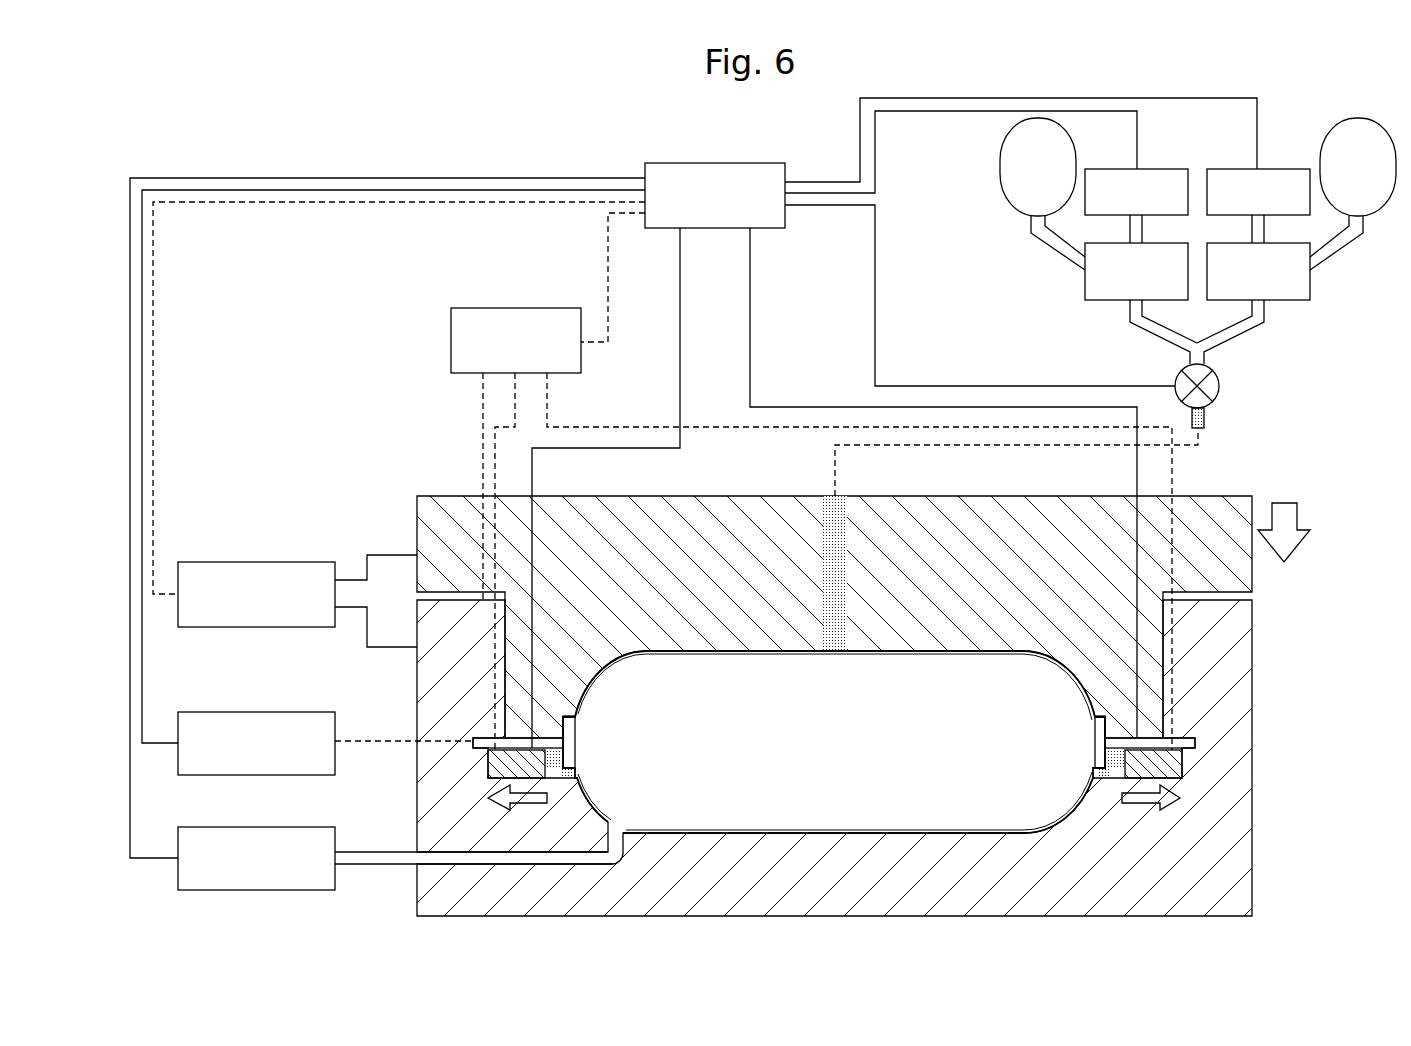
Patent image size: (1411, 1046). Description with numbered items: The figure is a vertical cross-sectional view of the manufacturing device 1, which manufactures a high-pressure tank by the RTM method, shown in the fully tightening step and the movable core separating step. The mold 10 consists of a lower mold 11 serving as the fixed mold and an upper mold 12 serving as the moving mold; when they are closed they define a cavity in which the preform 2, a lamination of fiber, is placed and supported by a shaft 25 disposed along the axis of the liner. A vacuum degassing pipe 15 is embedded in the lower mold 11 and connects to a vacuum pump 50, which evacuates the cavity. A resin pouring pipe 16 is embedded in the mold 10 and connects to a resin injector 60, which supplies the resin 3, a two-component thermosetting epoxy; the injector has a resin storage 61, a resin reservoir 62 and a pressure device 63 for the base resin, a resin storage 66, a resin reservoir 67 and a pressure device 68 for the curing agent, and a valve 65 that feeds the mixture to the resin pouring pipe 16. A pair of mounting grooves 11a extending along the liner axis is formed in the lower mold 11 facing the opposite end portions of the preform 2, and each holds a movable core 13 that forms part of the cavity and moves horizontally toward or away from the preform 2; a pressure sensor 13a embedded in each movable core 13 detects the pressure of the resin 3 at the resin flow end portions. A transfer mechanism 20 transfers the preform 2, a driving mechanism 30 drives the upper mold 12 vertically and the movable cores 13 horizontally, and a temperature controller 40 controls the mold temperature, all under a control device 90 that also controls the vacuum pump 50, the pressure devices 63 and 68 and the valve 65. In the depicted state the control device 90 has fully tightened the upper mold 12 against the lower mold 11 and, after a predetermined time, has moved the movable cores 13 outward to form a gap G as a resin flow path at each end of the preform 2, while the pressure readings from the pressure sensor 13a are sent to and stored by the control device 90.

The manufacturing device 1 is at (283, 158).
The preform 2 is at (975, 797).
The resin 3 is at (853, 575).
The mold 10 is at (1326, 580).
The lower mold 11 is at (1230, 663).
The mounting groove 11a is at (1183, 768).
The upper mold 12 is at (1240, 553).
The movable core 13 is at (1183, 755).
The pressure sensor 13a is at (538, 778).
The vacuum degassing pipe 15 is at (473, 870).
The resin pouring pipe 16 is at (823, 496).
The transfer mechanism 20 is at (237, 712).
The shaft 25 is at (1190, 737).
The driving mechanism 30 is at (497, 308).
The temperature controller 40 is at (237, 562).
The vacuum pump 50 is at (237, 827).
The resin injector 60 is at (1304, 362).
The resin storage 61 is at (1015, 212).
The resin reservoir 62 is at (1092, 300).
The pressure device 63 is at (1103, 169).
The valve 65 is at (1220, 388).
The resin storage 66 is at (1382, 212).
The resin reservoir 67 is at (1302, 300).
The pressure device 68 is at (1286, 169).
The control device 90 is at (688, 163).
The gap G is at (566, 778).